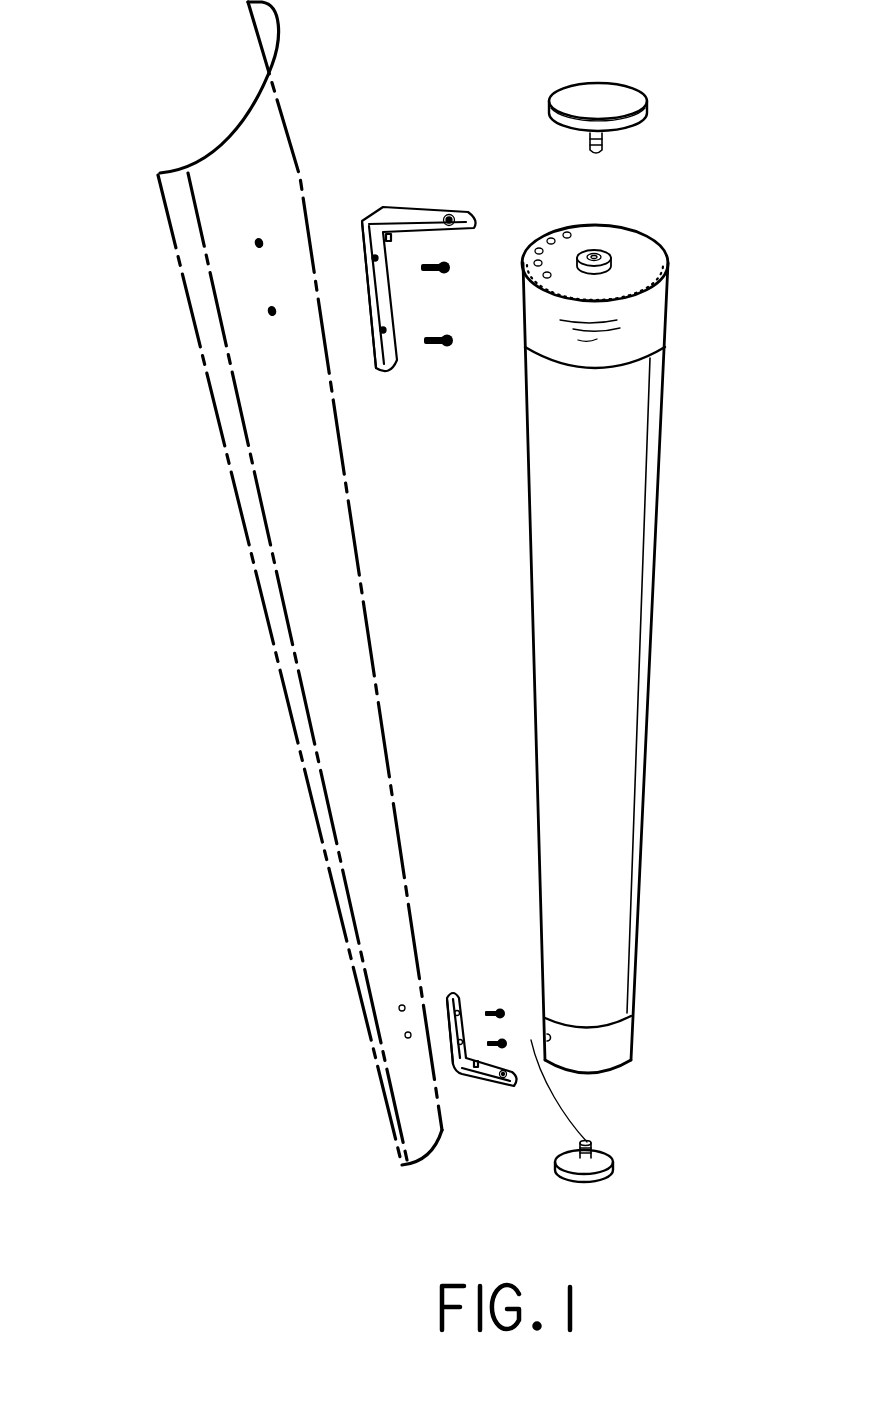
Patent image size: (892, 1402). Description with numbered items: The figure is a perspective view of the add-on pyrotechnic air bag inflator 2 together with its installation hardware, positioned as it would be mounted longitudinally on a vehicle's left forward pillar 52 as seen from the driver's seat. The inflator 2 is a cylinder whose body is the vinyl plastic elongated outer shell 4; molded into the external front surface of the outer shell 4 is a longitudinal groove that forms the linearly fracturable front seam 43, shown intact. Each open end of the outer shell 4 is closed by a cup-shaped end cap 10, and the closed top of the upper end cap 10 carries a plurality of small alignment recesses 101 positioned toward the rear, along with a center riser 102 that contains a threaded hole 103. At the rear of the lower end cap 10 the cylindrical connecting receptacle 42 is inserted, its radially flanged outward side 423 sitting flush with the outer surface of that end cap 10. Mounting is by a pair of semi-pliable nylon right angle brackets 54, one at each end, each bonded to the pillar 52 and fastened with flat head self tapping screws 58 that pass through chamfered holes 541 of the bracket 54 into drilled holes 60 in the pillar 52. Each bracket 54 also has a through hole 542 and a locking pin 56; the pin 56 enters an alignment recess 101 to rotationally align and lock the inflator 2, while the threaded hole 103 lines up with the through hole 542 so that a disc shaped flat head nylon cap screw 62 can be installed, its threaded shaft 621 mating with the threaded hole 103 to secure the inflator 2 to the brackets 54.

The air bag inflator 2 is at (667, 670).
The outer shell 4 is at (562, 541).
The front seam 43 is at (650, 433).
The end cap 10 is at (640, 324).
The alignment recess 101 is at (538, 238).
The riser 102 is at (611, 271).
The threaded hole 103 is at (605, 255).
The connecting receptacle 42 is at (560, 1066).
The outward side 423 is at (552, 1050).
The forward pillar 52 is at (280, 716).
The right angle bracket 54 is at (388, 200).
The chamfered hole 541 is at (450, 1042).
The through hole 542 is at (448, 213).
The locking pin 56 is at (393, 232).
The self tapping screw 58 is at (453, 280).
The drilled hole 60 is at (258, 247).
The cap screw 62 is at (612, 78).
The threaded shaft 621 is at (603, 150).